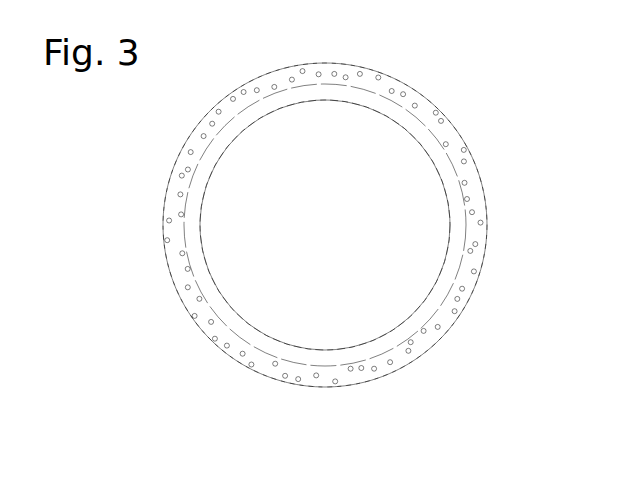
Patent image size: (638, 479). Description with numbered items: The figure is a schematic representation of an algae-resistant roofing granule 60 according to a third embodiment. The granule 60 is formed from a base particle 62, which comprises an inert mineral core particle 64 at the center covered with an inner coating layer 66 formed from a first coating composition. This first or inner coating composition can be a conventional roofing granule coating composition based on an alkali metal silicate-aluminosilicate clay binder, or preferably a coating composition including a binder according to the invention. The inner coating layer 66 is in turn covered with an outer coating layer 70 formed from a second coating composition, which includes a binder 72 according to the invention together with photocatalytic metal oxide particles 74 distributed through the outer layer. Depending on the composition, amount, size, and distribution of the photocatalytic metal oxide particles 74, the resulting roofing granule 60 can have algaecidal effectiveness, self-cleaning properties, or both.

The algae-resistant granule 60 is at (316, 190).
The base particle 62 is at (290, 258).
The inert mineral core particle 64 is at (378, 190).
The inner coating layer 66 is at (197, 270).
The outer coating layer 70 is at (397, 93).
The binder 72 is at (470, 267).
The photocatalytic metal oxide particles 74 is at (336, 226).